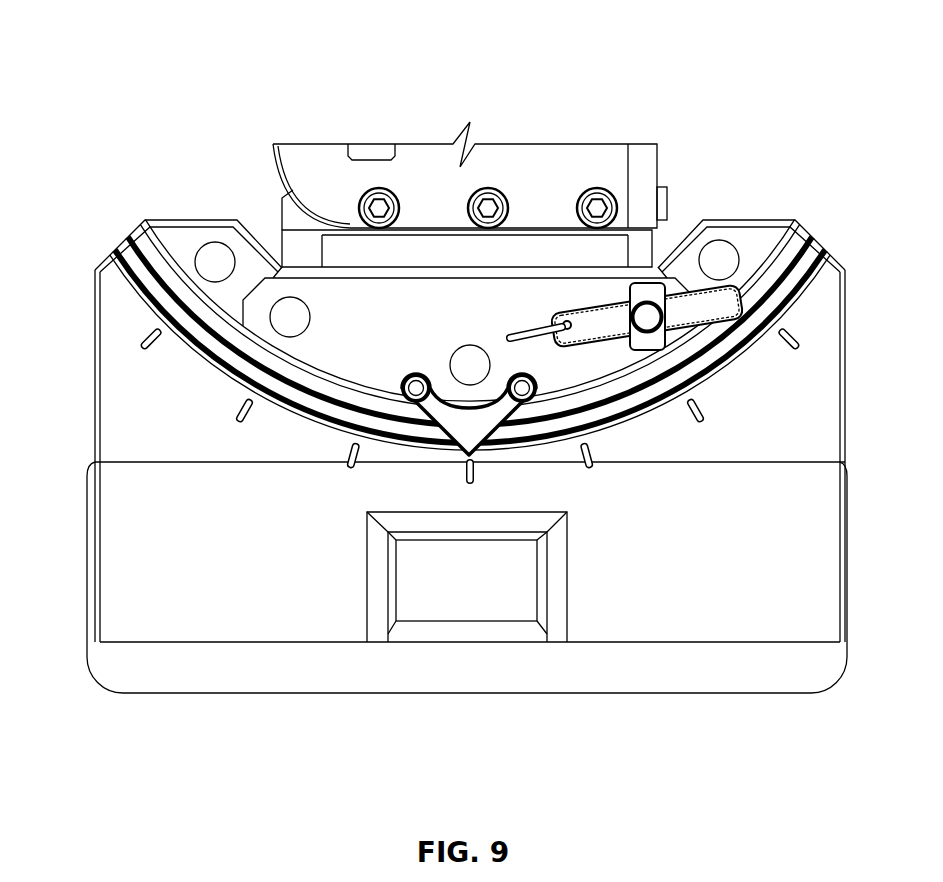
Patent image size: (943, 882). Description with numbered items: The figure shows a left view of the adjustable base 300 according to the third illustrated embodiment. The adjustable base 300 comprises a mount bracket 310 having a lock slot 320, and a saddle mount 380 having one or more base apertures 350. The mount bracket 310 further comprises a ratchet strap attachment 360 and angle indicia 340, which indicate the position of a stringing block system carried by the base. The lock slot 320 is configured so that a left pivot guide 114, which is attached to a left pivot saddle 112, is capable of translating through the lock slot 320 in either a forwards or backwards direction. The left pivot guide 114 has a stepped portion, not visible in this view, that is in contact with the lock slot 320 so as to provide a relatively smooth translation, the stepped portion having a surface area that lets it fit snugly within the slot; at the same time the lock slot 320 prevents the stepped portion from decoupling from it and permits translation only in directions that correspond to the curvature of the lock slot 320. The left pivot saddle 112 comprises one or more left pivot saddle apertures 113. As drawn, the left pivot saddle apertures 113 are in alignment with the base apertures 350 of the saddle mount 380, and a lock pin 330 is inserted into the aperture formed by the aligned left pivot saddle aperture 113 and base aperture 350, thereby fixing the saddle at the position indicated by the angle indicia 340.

The adjustable base 300 is at (786, 46).
The mount bracket 310 is at (272, 677).
The lock slot 320 is at (203, 348).
The lock pin 330 is at (590, 313).
The angle indicia 340 is at (220, 443).
The base apertures 350 is at (213, 260).
The ratchet strap attachment 360 is at (540, 580).
The saddle mount 380 is at (220, 218).
The left pivot saddle 112 is at (470, 311).
The left pivot saddle apertures 113 is at (293, 322).
The left pivot guide 114 is at (445, 417).